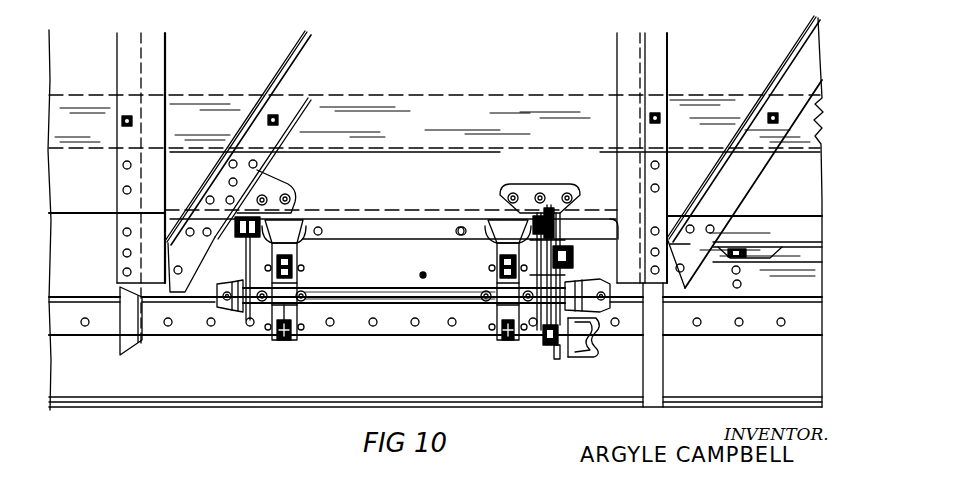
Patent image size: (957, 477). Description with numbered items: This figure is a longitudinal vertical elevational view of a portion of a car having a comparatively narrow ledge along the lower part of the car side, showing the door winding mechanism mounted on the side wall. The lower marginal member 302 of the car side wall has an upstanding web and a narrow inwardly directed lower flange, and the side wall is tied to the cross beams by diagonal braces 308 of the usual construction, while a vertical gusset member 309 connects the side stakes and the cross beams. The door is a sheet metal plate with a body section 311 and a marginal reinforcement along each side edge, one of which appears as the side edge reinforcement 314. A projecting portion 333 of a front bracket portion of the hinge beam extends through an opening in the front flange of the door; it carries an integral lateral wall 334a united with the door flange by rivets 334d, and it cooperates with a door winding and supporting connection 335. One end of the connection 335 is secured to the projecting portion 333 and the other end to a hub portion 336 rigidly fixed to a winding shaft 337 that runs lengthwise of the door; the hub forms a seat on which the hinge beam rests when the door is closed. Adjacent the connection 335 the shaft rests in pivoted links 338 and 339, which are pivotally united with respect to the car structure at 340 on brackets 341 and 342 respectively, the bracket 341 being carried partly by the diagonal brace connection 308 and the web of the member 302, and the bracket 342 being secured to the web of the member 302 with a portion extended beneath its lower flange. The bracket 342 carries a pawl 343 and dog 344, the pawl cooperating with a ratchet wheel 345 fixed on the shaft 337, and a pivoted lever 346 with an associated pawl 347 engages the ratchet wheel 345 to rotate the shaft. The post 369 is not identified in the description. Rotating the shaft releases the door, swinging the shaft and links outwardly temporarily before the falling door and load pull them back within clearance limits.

The lower marginal member 302 is at (352, 182).
The diagonal brace 308 is at (340, 54).
The vertical gusset member 309 is at (167, 300).
The body section 311 is at (398, 200).
The side edge marginal reinforcement 314 is at (182, 212).
The projecting portion 333 is at (497, 215).
The lateral wall 334a is at (456, 228).
The rivet 334d is at (447, 247).
The door winding and supporting connection 335 is at (282, 343).
The hub portion 336 is at (300, 313).
The winding shaft 337 is at (390, 300).
The pivoted link 338 is at (245, 308).
The pivoted link 339 is at (533, 313).
The pivot 340 is at (238, 216).
The bracket 341 is at (270, 182).
The bracket 342 is at (525, 184).
The pawl 343 is at (572, 232).
The dog 344 is at (572, 257).
The ratchet wheel 345 is at (545, 340).
The pivoted lever 346 is at (586, 352).
The pawl 347 is at (559, 350).
The post 369 is at (672, 287).